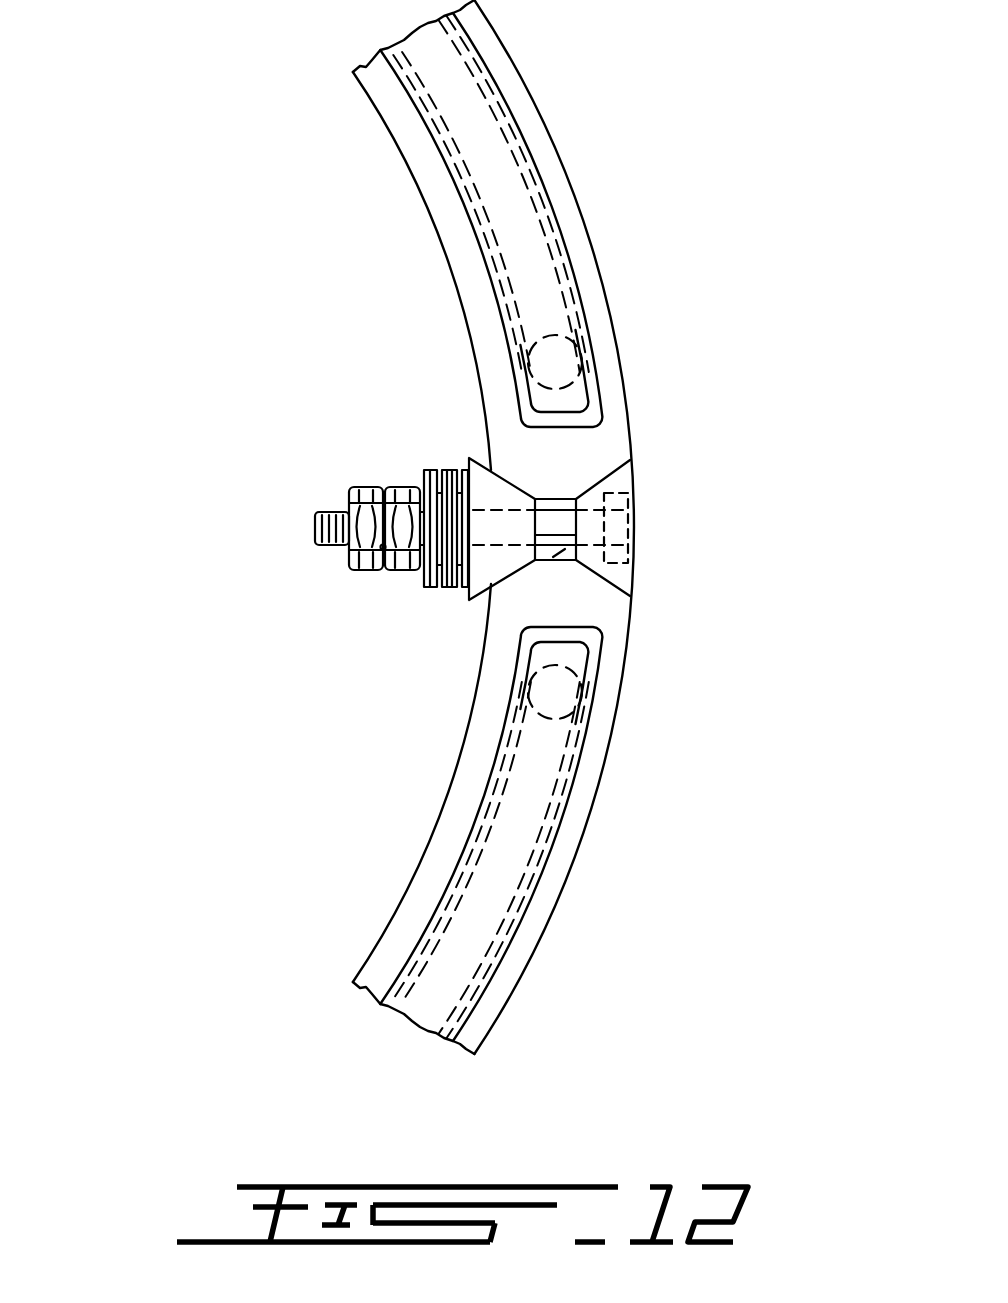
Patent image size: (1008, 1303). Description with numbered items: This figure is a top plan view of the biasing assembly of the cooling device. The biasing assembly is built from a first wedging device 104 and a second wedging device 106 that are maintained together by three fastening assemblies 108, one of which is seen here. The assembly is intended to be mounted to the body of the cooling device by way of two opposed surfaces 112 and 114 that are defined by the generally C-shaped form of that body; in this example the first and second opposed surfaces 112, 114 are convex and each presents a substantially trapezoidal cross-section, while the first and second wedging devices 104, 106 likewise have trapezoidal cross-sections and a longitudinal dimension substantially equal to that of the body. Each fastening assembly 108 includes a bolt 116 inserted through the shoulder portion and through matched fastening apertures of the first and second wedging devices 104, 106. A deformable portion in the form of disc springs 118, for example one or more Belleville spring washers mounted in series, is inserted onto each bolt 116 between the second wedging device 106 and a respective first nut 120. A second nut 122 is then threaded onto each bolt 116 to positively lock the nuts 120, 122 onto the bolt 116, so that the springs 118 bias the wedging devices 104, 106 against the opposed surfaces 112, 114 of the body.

The first wedging device 104 is at (630, 482).
The second wedging device 106 is at (447, 588).
The fastening assembly 108 is at (270, 514).
The first opposed surface 112 is at (577, 540).
The second opposed surface 114 is at (568, 497).
The bolt 116 is at (320, 546).
The disc springs 118 is at (445, 478).
The first nut 120 is at (397, 482).
The second nut 122 is at (352, 569).